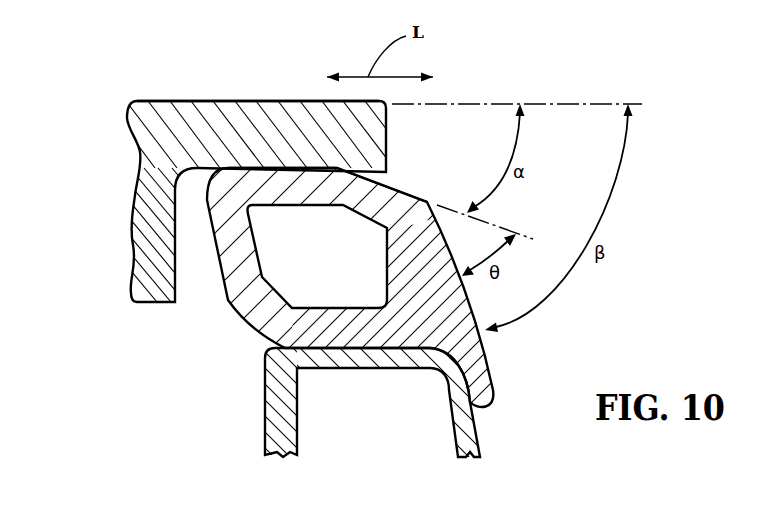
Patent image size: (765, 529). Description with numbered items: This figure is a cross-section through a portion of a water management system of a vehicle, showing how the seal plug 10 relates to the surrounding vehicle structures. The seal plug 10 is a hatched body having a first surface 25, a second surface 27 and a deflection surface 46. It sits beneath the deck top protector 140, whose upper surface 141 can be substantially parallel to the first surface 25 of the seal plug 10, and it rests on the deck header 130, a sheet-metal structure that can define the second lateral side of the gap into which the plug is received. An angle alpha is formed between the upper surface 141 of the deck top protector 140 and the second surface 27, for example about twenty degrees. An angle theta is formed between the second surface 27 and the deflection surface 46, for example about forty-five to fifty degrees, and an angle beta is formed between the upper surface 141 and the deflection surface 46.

The seal plug 10 is at (245, 308).
The first surface 25 is at (281, 168).
The second surface 27 is at (392, 183).
The deflection surface 46 is at (440, 229).
The deck header 130 is at (272, 417).
The deck top protector 140 is at (135, 204).
The upper surface 141 is at (205, 101).